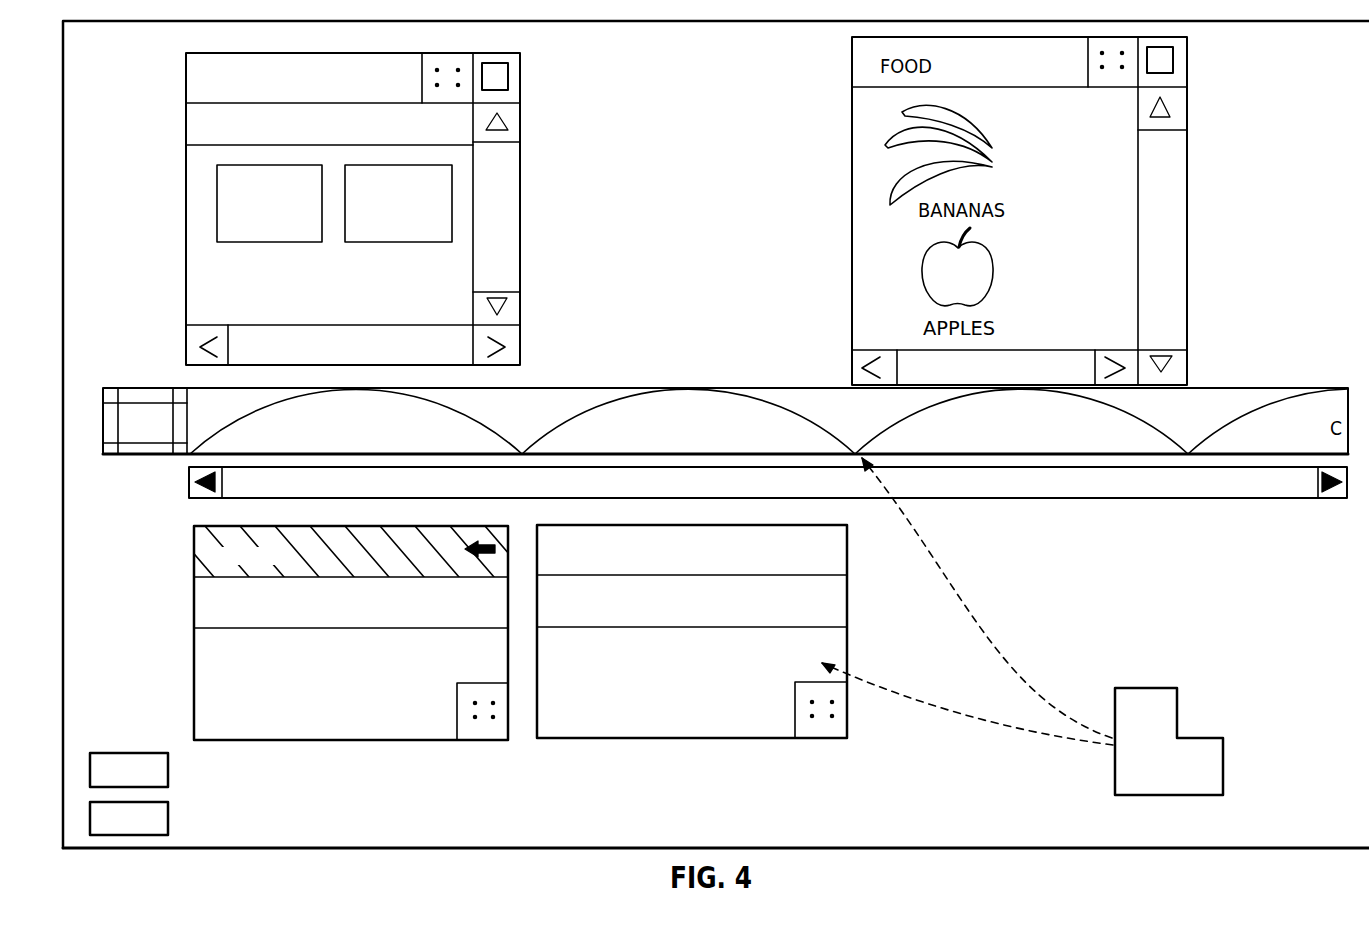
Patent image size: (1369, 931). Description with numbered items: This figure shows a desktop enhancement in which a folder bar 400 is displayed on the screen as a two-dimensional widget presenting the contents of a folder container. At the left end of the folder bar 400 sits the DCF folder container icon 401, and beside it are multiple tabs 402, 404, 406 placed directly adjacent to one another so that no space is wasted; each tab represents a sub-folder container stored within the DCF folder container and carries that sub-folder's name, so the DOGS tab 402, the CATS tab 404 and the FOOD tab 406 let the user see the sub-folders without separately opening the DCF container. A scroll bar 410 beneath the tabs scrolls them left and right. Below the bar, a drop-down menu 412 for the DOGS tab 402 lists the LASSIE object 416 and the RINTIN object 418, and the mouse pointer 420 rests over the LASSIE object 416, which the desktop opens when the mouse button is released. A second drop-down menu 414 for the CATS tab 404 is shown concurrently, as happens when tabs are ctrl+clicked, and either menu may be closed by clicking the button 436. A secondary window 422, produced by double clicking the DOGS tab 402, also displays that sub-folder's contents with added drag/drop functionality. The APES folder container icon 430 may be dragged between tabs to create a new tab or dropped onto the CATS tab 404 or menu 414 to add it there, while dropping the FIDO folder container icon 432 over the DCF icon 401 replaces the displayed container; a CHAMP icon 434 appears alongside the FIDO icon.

The folder bar 400 is at (1262, 598).
The DCF folder container icon 401 is at (140, 440).
The tab 402 is at (423, 432).
The tab 404 is at (767, 431).
The tab 406 is at (1108, 432).
The scroll bar 410 is at (1338, 498).
The drop-down menu 412 is at (194, 680).
The drop-down menu 414 is at (750, 738).
The LASSIE object 416 is at (196, 570).
The RINTIN object 418 is at (196, 616).
The mouse pointer 420 is at (481, 557).
The secondary window 422 is at (185, 210).
The APES folder container icon 430 is at (1198, 752).
The FIDO folder container icon 432 is at (168, 777).
The CHAMP icon 434 is at (168, 825).
The button 436 is at (481, 740).